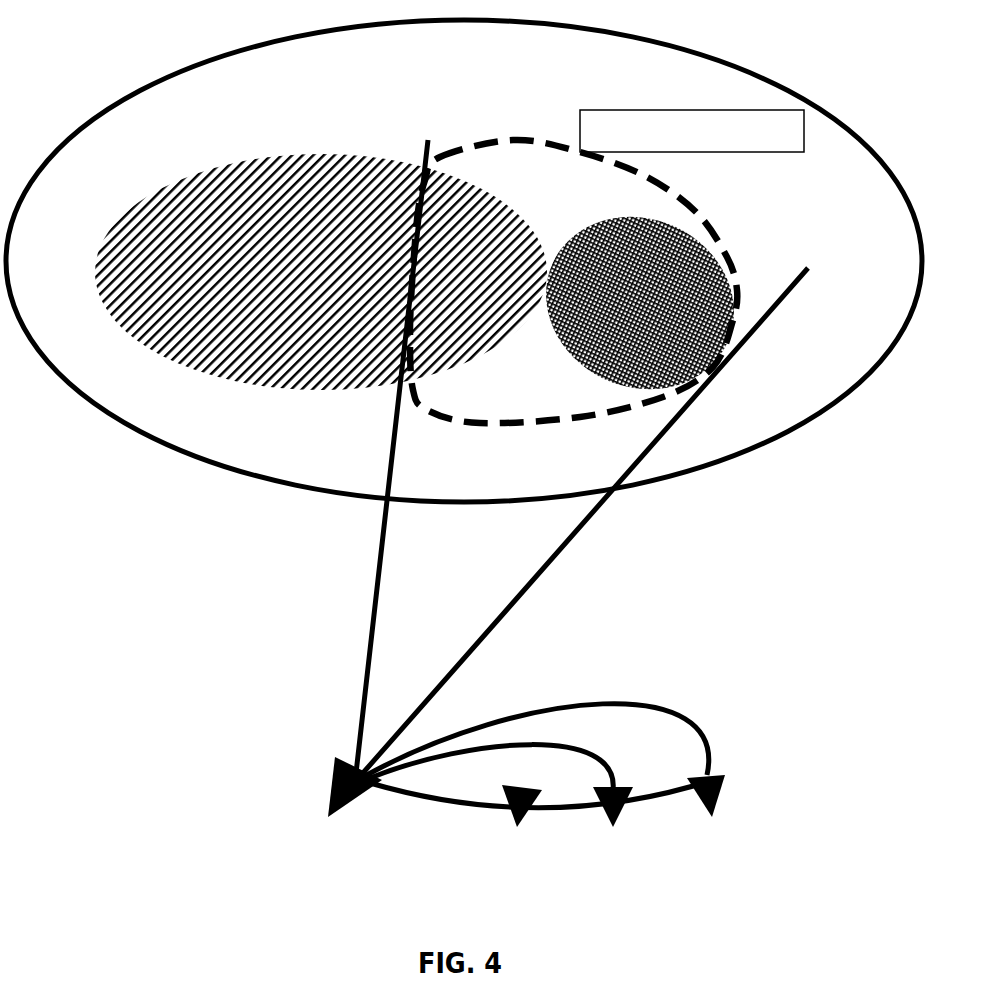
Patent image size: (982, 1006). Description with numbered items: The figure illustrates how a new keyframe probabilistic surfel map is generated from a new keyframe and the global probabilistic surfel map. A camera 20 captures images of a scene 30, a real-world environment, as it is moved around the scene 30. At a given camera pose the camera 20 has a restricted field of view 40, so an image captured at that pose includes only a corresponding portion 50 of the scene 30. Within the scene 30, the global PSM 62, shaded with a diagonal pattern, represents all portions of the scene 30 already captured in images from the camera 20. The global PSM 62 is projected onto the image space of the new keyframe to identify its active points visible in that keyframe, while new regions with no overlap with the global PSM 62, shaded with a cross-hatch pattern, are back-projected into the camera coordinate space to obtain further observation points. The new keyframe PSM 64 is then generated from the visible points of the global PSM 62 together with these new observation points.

The camera 20 is at (330, 780).
The scene 30 is at (270, 40).
The field of view 40 is at (533, 580).
The portion of the scene 50 is at (688, 222).
The global PSM 62 is at (280, 158).
The keyframe PSM 64 is at (618, 224).